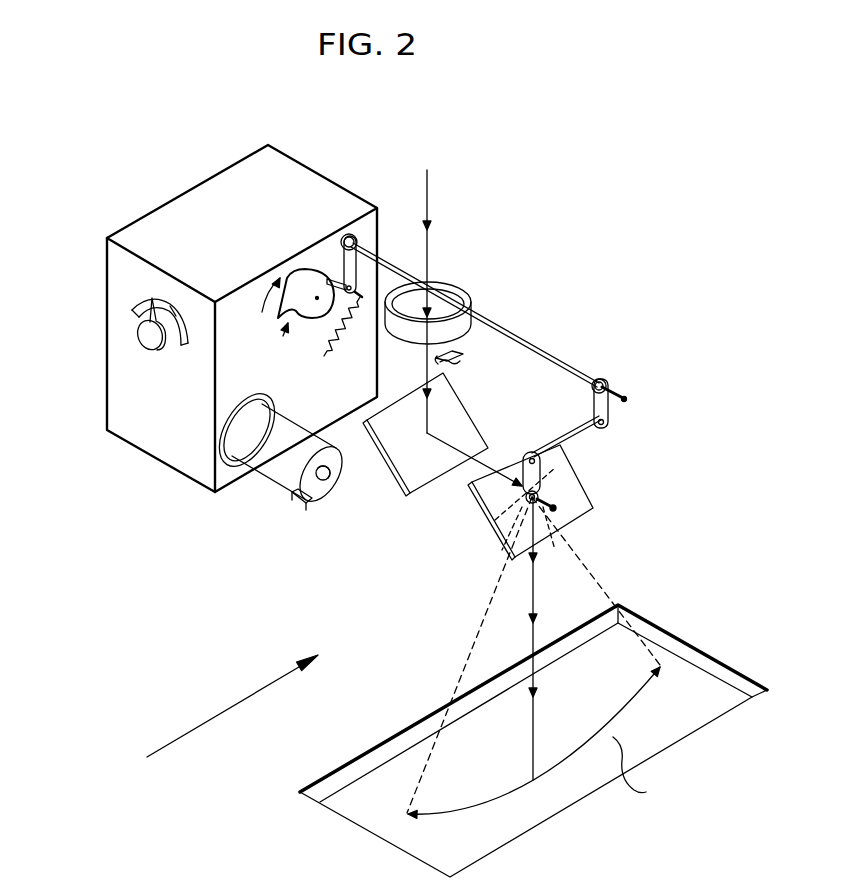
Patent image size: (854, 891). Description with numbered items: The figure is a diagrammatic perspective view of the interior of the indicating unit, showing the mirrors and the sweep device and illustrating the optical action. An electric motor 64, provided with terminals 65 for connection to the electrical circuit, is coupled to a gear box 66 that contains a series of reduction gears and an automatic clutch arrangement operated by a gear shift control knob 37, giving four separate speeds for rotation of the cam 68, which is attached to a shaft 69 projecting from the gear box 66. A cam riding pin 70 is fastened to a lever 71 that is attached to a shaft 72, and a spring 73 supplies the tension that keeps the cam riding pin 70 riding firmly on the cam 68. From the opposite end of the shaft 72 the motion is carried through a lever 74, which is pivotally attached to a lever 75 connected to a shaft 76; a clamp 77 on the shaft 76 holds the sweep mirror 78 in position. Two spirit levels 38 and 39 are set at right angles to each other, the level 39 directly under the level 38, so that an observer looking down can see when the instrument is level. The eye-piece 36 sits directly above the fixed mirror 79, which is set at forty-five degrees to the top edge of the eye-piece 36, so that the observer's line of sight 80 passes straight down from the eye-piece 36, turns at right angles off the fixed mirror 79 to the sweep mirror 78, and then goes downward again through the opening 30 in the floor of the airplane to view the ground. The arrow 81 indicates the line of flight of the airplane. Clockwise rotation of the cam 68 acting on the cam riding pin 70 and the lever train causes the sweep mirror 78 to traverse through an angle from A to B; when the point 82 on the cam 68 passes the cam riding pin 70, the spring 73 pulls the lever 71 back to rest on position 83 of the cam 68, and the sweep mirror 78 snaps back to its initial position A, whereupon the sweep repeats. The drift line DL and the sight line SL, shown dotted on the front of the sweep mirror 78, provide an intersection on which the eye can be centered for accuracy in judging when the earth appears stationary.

The opening 30 is at (300, 830).
The eye-piece 36 is at (465, 284).
The gear shift control knob 37 is at (158, 350).
The spirit level 38 is at (458, 360).
The spirit level 39 is at (426, 372).
The electric motor 64 is at (266, 474).
The terminals 65 is at (298, 506).
The gear box 66 is at (145, 219).
The cam 68 is at (281, 338).
The shaft 69 is at (316, 298).
The cam riding pin 70 is at (333, 276).
The lever 71 is at (343, 232).
The shaft 72 is at (549, 352).
The spring 73 is at (335, 346).
The lever 74 is at (598, 430).
The lever 75 is at (524, 458).
The shaft 76 is at (558, 510).
The clamp 77 is at (503, 532).
The sweep mirror 78 is at (590, 498).
The fixed mirror 79 is at (398, 475).
The observer's line of sight 80 is at (428, 216).
The line of flight arrow 81 is at (213, 693).
The point on cam 82 is at (268, 314).
The position on cam 83 is at (306, 318).
The initial sweep position A is at (663, 672).
The end sweep position B is at (410, 816).
The drift line DL is at (566, 462).
The sight line SL is at (556, 563).